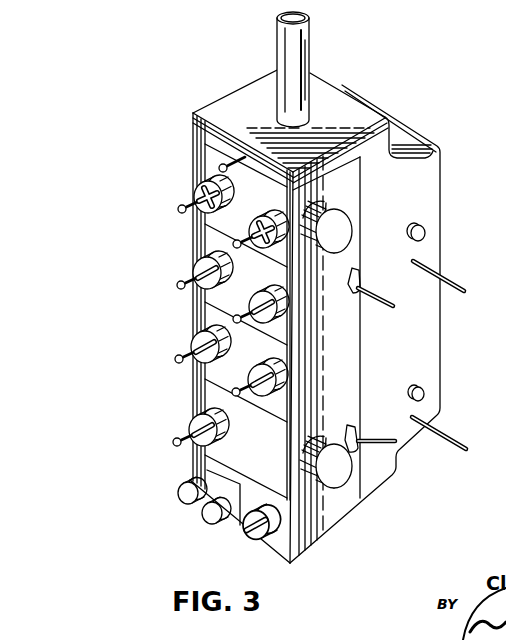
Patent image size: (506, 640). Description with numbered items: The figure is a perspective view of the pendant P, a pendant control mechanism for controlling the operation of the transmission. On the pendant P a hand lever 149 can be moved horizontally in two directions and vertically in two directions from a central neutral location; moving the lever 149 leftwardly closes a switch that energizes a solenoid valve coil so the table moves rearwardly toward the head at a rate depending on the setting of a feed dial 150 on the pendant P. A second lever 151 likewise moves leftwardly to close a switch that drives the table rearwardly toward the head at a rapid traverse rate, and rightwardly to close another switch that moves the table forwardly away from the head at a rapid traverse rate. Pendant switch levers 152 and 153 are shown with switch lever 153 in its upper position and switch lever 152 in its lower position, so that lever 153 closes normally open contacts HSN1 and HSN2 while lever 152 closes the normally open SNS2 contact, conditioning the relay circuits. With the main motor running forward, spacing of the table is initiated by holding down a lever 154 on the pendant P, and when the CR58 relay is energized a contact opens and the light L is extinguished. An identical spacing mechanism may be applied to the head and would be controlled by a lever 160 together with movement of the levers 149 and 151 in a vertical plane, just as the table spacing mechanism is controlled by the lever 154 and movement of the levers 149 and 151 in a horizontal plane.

The hand lever 149 is at (181, 208).
The feed dial 150 is at (347, 227).
The lever 151 is at (238, 248).
The pendant switch lever 152 is at (389, 305).
The pendant switch lever 153 is at (393, 438).
The lever 154 is at (450, 281).
The lever 160 is at (451, 440).
The light L is at (427, 232).
The pendant P is at (124, 327).